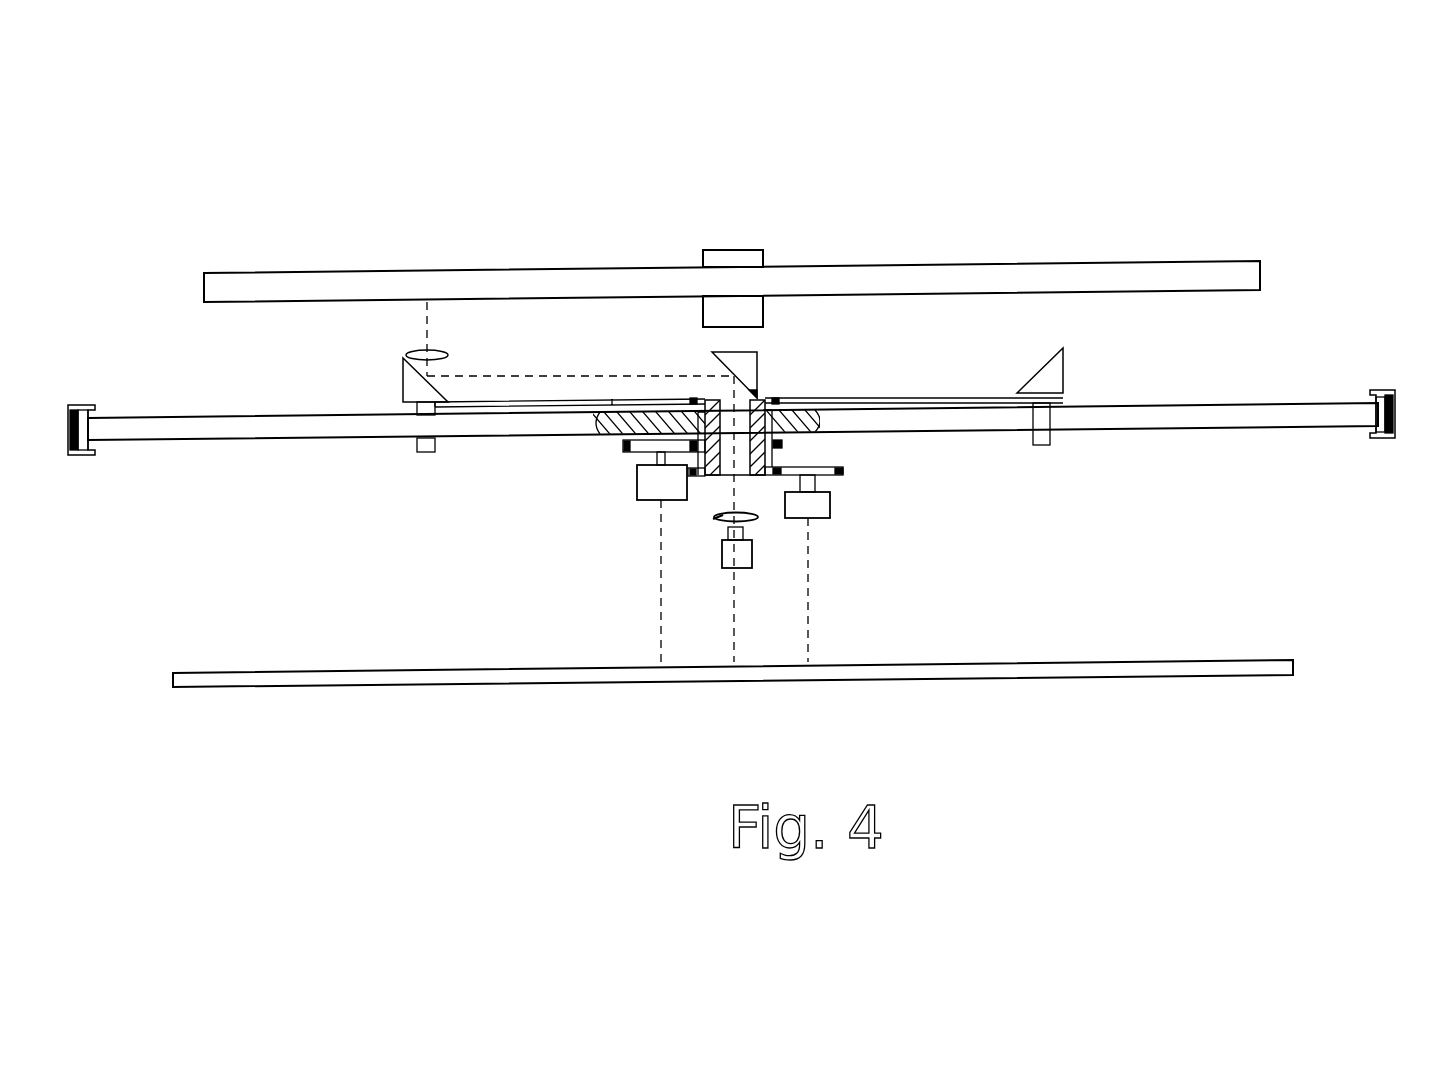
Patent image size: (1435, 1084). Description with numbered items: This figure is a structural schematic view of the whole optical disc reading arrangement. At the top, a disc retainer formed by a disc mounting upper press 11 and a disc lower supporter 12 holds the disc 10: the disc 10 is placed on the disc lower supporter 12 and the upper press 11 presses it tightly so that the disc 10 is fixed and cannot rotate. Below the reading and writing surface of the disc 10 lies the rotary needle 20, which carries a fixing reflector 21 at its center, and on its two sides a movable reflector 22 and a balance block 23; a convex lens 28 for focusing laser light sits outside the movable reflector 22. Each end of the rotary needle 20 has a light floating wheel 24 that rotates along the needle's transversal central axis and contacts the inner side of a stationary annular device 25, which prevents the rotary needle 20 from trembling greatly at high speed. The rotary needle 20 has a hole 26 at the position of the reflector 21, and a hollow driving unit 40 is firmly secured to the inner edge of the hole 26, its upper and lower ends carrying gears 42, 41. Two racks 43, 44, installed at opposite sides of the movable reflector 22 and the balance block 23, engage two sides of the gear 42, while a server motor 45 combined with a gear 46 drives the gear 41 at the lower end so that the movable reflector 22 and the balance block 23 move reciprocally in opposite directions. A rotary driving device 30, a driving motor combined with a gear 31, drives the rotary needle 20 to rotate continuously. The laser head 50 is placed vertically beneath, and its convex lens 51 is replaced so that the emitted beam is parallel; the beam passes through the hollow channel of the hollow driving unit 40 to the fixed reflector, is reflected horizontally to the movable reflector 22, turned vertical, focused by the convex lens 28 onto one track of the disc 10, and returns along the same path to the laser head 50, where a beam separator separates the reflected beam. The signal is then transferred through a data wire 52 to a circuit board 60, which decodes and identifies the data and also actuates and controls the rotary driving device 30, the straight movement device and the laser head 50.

The disc 10 is at (1070, 270).
The disc mounting upper press 11 is at (725, 258).
The disc lower supporter 12 is at (750, 315).
The rotary needle 20 is at (1086, 436).
The fixing reflector 21 is at (757, 361).
The movable reflector 22 is at (414, 388).
The balance block 23 is at (1058, 372).
The light floating wheel 24 is at (1375, 432).
The annular device 25 is at (1388, 390).
The hole 26 is at (724, 478).
The convex lens 28 is at (421, 352).
The rotary driving device 30 is at (636, 482).
The gear 31 is at (623, 446).
The hollow driving unit 40 is at (754, 478).
The gear 41 is at (785, 443).
The gear 42 is at (690, 399).
The rack 43 is at (972, 398).
The rack 44 is at (566, 400).
The server motor 45 is at (830, 505).
The gear 46 is at (785, 471).
The laser head 50 is at (738, 557).
The convex lens 51 is at (714, 518).
The data wire 52 is at (735, 608).
The circuit board 60 is at (878, 672).